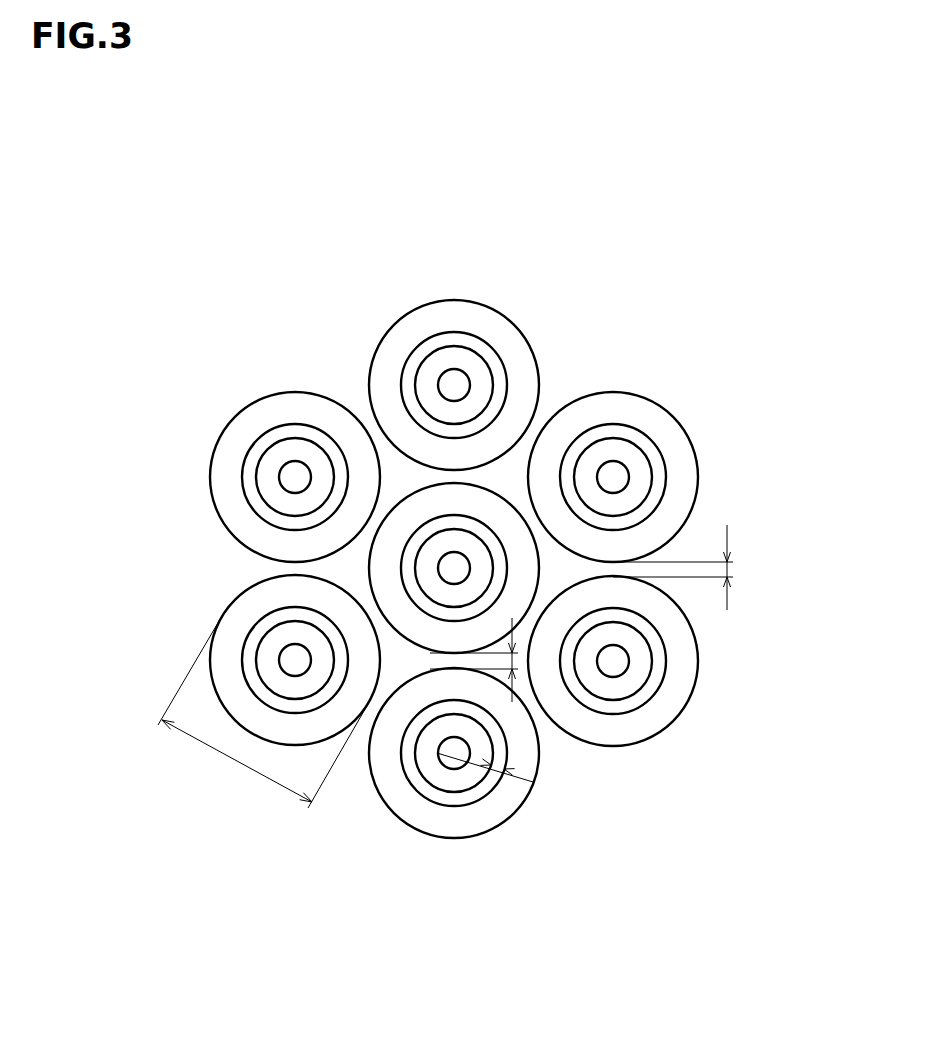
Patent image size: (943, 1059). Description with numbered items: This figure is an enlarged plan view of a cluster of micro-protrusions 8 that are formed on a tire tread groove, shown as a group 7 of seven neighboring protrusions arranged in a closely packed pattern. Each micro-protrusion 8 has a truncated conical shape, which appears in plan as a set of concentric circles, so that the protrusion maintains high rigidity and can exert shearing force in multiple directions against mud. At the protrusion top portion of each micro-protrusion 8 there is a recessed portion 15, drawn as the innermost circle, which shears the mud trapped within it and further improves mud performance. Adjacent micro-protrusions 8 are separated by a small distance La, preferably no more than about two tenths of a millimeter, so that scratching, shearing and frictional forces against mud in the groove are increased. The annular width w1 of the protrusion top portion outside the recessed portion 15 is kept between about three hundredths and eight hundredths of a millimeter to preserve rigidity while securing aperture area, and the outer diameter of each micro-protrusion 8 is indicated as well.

The optical fiber bundle 7 is at (742, 335).
The micro-protrusion 8 is at (492, 290).
The recessed portion 15 is at (268, 468).
The distance between adjacent micro-protrusions La is at (612, 803).
The width of the protrusion top portion w1 is at (497, 773).